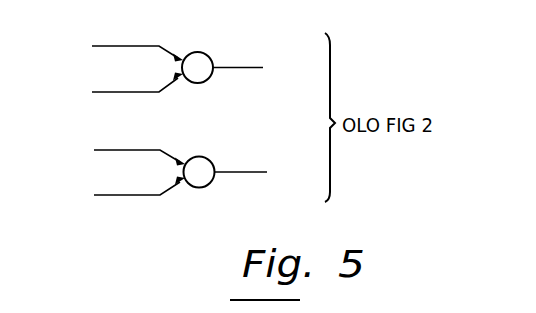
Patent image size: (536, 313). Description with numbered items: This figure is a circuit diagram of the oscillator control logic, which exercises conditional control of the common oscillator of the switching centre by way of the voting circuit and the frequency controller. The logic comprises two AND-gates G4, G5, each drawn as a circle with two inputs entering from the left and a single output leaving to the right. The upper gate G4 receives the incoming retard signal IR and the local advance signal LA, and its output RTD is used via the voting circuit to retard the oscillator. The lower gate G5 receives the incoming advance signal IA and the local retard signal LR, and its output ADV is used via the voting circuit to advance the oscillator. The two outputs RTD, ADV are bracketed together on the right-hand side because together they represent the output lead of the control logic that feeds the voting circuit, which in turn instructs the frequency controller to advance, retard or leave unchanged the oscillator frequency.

The AND-gate G4 is at (197, 56).
The AND-gate G5 is at (199, 159).
The incoming retard signal IR is at (121, 49).
The local advance signal LA is at (121, 89).
The incoming advance signal IA is at (122, 153).
The local retard signal LR is at (122, 192).
The retard output RTD is at (260, 68).
The advance output ADV is at (264, 171).